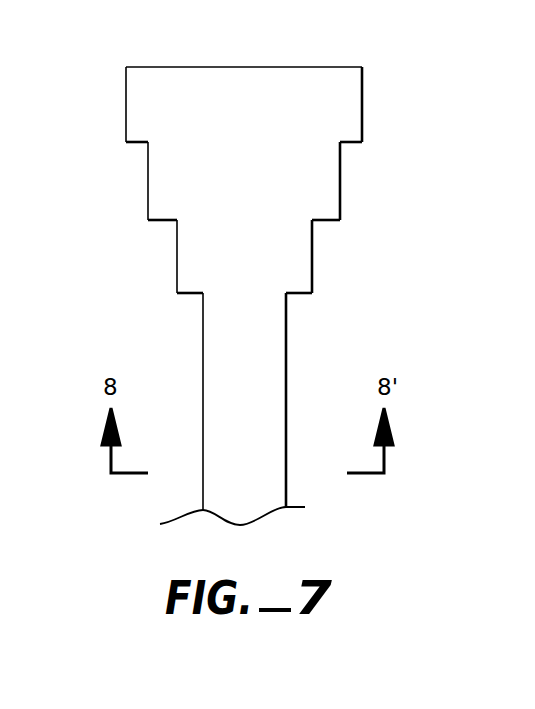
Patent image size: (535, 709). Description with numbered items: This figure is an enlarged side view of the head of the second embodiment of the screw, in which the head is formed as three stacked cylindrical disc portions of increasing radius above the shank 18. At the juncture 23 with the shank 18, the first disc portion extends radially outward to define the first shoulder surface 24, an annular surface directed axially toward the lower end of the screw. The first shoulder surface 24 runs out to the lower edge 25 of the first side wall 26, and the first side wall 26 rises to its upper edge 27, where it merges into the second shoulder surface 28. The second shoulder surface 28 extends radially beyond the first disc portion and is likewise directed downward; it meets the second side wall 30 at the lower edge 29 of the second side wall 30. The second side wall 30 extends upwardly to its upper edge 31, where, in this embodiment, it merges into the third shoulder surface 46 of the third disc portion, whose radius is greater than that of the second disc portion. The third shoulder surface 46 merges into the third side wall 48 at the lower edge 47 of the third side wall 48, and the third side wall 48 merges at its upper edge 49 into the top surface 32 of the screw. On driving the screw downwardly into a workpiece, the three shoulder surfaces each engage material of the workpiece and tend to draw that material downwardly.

The shank 18 is at (287, 415).
The juncture 23 is at (288, 300).
The first shoulder surface 24 is at (185, 295).
The lower edge of first side wall 25 is at (318, 294).
The first side wall 26 is at (177, 256).
The upper edge of first side wall 27 is at (313, 224).
The second shoulder surface 28 is at (159, 222).
The lower edge of second side wall 29 is at (345, 222).
The second side wall 30 is at (148, 180).
The upper edge of second side wall 31 is at (341, 145).
The top surface 32 is at (306, 67).
The third shoulder surface 46 is at (136, 144).
The lower edge of third side wall 47 is at (364, 141).
The third side wall 48 is at (126, 103).
The upper edge of third side wall 49 is at (362, 67).